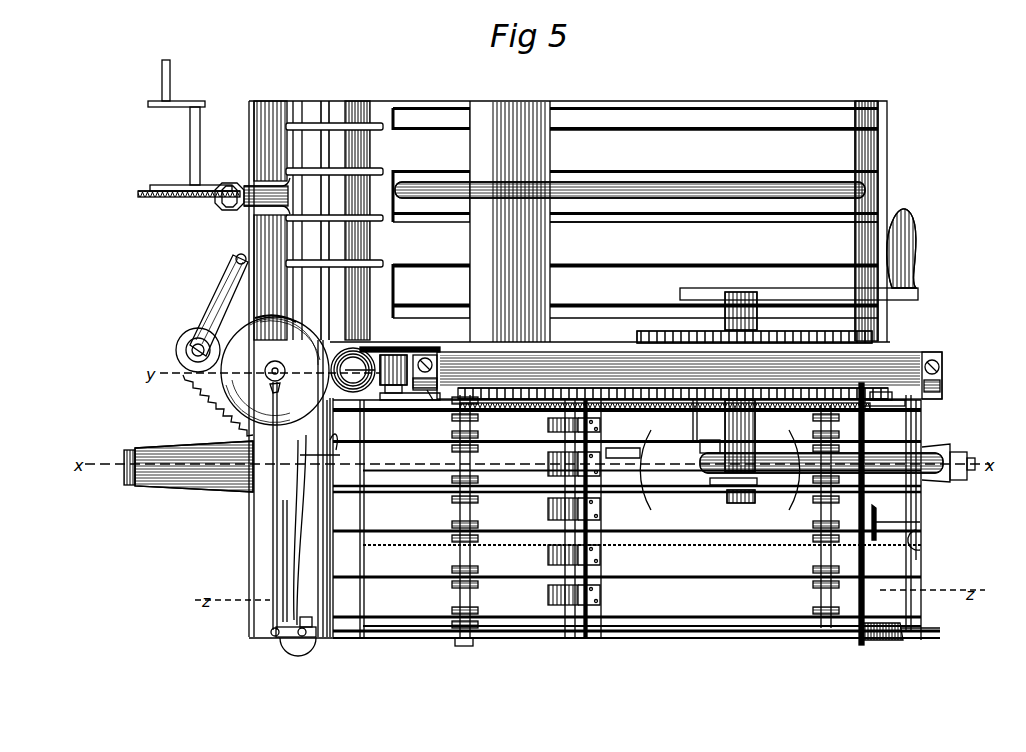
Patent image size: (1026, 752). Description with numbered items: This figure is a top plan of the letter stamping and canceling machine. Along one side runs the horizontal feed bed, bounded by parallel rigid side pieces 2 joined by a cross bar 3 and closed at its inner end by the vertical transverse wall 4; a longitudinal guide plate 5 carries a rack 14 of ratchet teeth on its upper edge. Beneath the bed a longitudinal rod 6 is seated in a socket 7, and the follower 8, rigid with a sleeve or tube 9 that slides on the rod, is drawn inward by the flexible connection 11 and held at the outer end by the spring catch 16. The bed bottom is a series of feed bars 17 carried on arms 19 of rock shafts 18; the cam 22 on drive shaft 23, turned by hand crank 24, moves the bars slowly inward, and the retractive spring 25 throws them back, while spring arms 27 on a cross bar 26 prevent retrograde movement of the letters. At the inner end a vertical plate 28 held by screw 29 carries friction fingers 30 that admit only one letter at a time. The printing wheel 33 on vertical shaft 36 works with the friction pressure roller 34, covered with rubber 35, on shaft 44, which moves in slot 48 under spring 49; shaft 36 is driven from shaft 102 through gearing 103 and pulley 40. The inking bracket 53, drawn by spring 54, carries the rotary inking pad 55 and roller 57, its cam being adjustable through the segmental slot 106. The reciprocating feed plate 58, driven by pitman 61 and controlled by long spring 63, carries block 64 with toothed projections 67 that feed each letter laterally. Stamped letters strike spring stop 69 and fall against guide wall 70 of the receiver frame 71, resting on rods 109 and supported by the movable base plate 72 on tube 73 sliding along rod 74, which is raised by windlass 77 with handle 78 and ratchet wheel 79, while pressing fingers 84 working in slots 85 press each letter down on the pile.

The side pieces 2 is at (920, 402).
The cross bar 3 is at (250, 500).
The vertical transverse wall 4 is at (340, 628).
The guide plate 5 is at (432, 352).
The horizontal longitudinal rod 6 is at (672, 466).
The socket 7 is at (172, 478).
The follower 8 is at (864, 593).
The sleeve or tube 9 is at (800, 485).
The flexible connection 11 is at (670, 545).
The rack 14 is at (794, 388).
The spring catch 16 is at (862, 384).
The feed bars 17 is at (410, 400).
The rock shafts 18 is at (878, 392).
The arms 19 is at (452, 440).
The cam 22 is at (730, 498).
The drive shaft 23 is at (758, 425).
The hand crank 24 is at (918, 296).
The retractive spring 25 is at (530, 416).
The cross bar 26 is at (640, 492).
The spring arms 27 is at (546, 456).
The vertical plate 28 is at (395, 400).
The screw 29 is at (426, 400).
The friction fingers 30 is at (340, 408).
The printing wheel 33 is at (275, 370).
The friction pressure roller 34 is at (348, 350).
The rubber covering 35 is at (286, 371).
The vertical shaft 36 is at (278, 388).
The pulley 40 is at (725, 474).
The vertical shaft 44 is at (283, 378).
The slot 48 is at (410, 352).
The spring 49 is at (396, 352).
The swinging arm or bracket 53 is at (232, 284).
The spring 54 is at (215, 407).
The rotary inking pad 55 is at (186, 350).
The roller 57 is at (184, 330).
The reciprocating feed plate 58 is at (296, 614).
The pitman 61 is at (272, 520).
The long spring 63 is at (282, 555).
The block or holder 64 is at (300, 456).
The toothed surface or projections 67 is at (338, 458).
The spring stop 69 is at (328, 100).
The inner longitudinal guide wall 70 is at (610, 350).
The rigid frame 71 is at (608, 104).
The movable base plate 72 is at (510, 221).
The elongated tube 73 is at (462, 222).
The rigid rod 74 is at (780, 210).
The windlass 77 is at (176, 143).
The handle 78 is at (160, 74).
The ratchet wheel 79 is at (178, 198).
The pressing fingers 84 is at (292, 122).
The slots 85 is at (380, 130).
The shaft 102 is at (700, 476).
The gearing 103 is at (675, 325).
The segmental slot 106 is at (310, 530).
The rods 109 is at (663, 129).